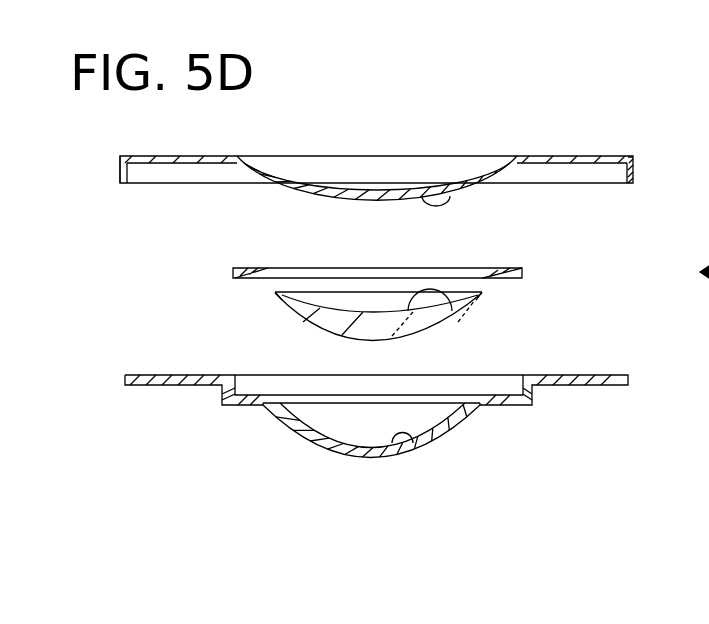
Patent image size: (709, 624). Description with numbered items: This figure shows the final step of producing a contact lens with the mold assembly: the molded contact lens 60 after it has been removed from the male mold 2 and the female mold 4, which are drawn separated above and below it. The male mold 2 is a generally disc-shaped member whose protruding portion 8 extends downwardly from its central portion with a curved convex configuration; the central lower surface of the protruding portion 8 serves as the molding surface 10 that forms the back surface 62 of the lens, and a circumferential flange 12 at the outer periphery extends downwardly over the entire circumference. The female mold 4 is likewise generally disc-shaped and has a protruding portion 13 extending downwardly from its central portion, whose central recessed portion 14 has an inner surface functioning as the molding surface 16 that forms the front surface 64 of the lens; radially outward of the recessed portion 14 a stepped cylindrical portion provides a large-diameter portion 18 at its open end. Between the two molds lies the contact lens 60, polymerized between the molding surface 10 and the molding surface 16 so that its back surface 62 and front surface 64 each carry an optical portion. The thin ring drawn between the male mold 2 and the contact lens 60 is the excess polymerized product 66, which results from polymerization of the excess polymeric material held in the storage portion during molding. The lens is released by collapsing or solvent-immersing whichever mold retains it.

The male mold 2 is at (597, 157).
The female mold 4 is at (596, 374).
The protruding portion 8 is at (340, 208).
The molding surface 10 is at (450, 196).
The circumferential flange 12 is at (121, 175).
The protruding portion 13 is at (247, 415).
The recessed portion 14 is at (355, 450).
The molding surface 16 is at (410, 443).
The large-diameter portion 18 is at (535, 388).
The contact lens 60 is at (298, 323).
The back surface 62 is at (452, 305).
The front surface 64 is at (395, 333).
The excess polymerized product 66 is at (523, 265).